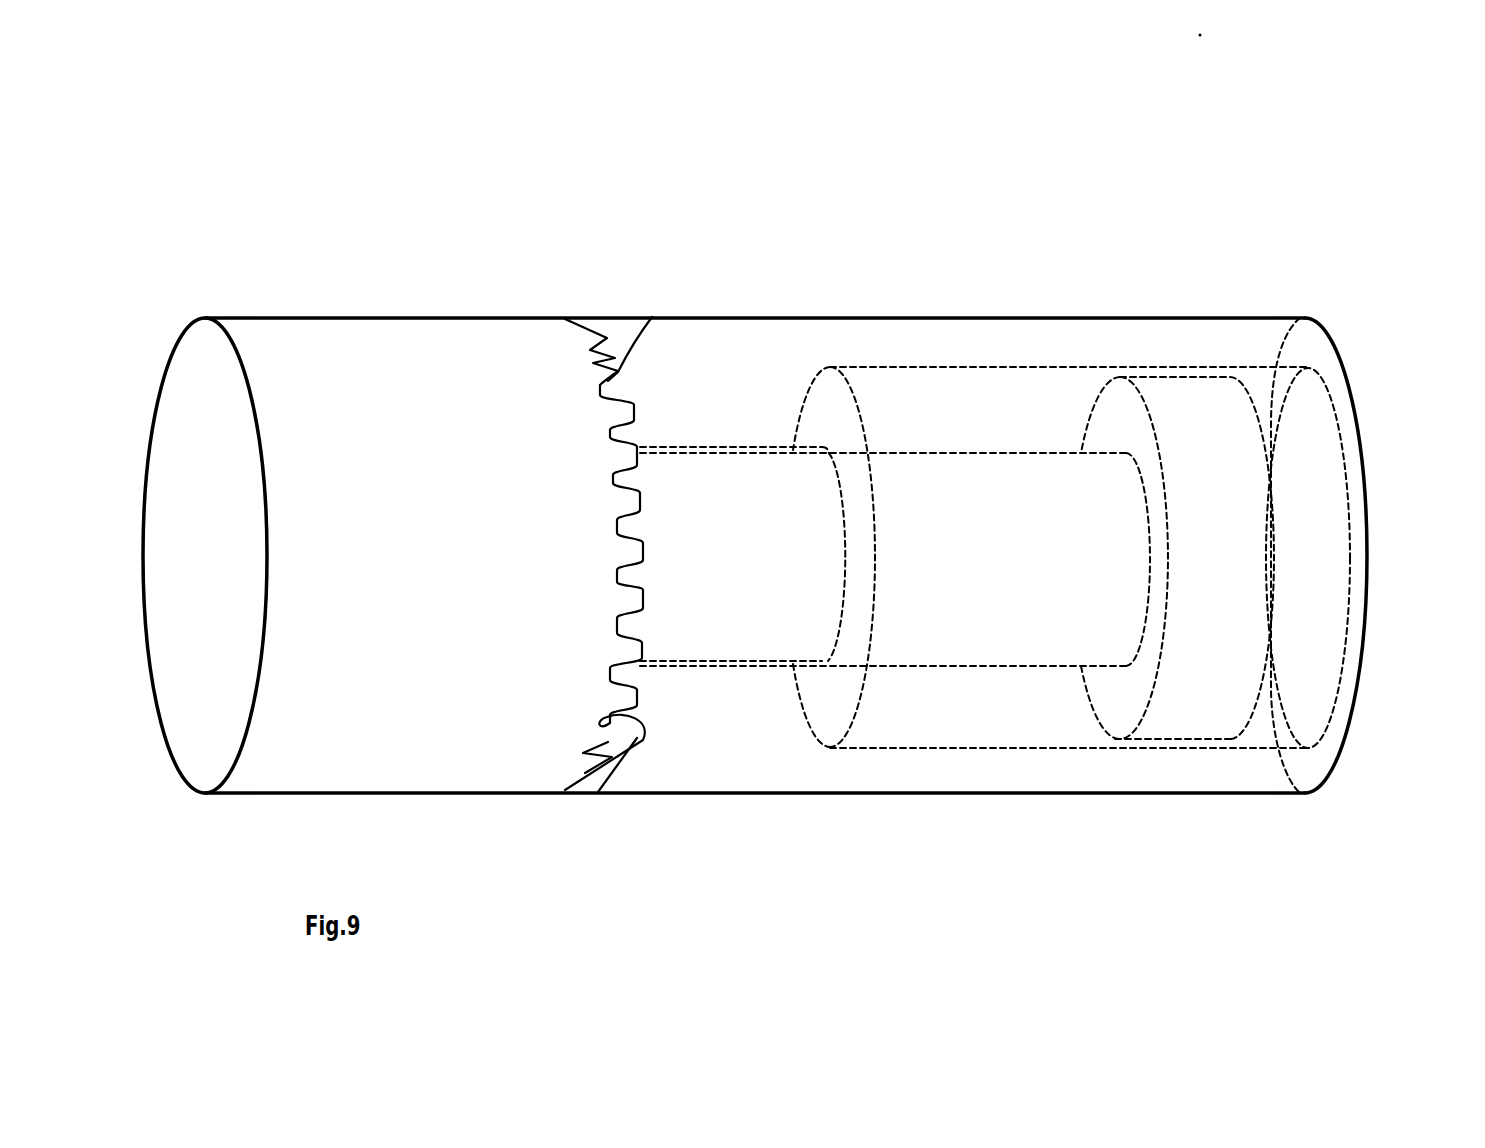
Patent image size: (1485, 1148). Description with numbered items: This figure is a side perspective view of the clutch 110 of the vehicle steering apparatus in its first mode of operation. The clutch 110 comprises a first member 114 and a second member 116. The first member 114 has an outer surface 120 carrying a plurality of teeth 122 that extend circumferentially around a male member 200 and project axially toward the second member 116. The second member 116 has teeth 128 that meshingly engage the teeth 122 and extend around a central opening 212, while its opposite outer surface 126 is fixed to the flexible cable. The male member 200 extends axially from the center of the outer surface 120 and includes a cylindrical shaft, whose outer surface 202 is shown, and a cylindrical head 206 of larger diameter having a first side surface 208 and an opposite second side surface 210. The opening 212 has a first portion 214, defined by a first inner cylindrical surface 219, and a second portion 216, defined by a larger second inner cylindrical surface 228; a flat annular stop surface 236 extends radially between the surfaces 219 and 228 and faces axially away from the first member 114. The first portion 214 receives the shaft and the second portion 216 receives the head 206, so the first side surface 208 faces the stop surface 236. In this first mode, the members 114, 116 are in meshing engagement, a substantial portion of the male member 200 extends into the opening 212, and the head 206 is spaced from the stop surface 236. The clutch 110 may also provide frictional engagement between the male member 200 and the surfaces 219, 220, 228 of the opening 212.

The clutch 110 is at (902, 192).
The first member 114 is at (358, 352).
The second member 116 is at (713, 338).
The outer surface 120 is at (584, 322).
The teeth 122 is at (650, 318).
The outer surface 126 is at (1362, 438).
The teeth 128 is at (612, 786).
The male member 200 is at (1247, 745).
The outer surface 202 is at (1274, 582).
The head 206 is at (1205, 375).
The first side surface 208 is at (1126, 700).
The second side surface 210 is at (1276, 512).
The opening 212 is at (1066, 402).
The first portion 214 is at (714, 668).
The second portion 216 is at (1016, 720).
The first inner cylindrical surface 219 is at (762, 662).
The surface 220 is at (848, 383).
The second inner cylindrical surface 228 is at (1200, 740).
The stop surface 236 is at (823, 397).